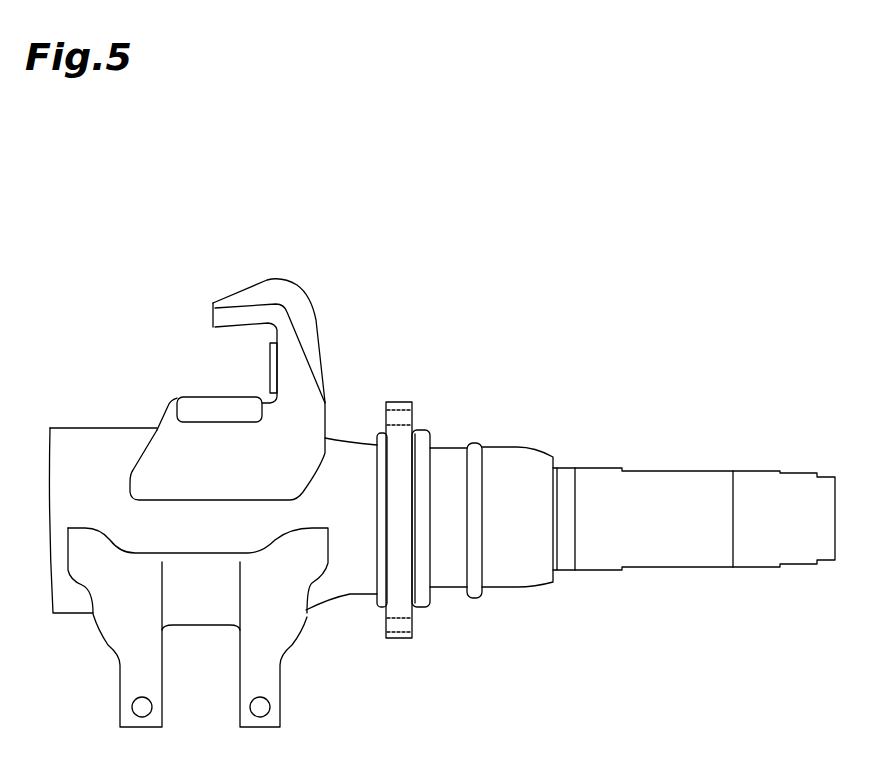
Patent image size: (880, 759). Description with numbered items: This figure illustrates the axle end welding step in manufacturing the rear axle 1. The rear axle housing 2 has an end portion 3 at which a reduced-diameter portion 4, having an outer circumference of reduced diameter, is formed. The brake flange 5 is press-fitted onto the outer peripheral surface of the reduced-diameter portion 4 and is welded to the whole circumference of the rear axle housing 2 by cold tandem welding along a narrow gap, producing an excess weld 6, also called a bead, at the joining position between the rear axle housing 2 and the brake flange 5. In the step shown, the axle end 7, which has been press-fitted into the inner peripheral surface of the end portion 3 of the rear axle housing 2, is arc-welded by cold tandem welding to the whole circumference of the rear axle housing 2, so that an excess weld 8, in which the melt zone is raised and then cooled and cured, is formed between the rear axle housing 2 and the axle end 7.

The rear axle 1 is at (448, 246).
The rear axle housing 2 is at (93, 428).
The end portion 3 is at (452, 483).
The reduced-diameter portion 4 is at (452, 448).
The brake flange 5 is at (398, 402).
The excess weld 6 is at (378, 436).
The axle end 7 is at (667, 468).
The excess weld 8 is at (473, 443).